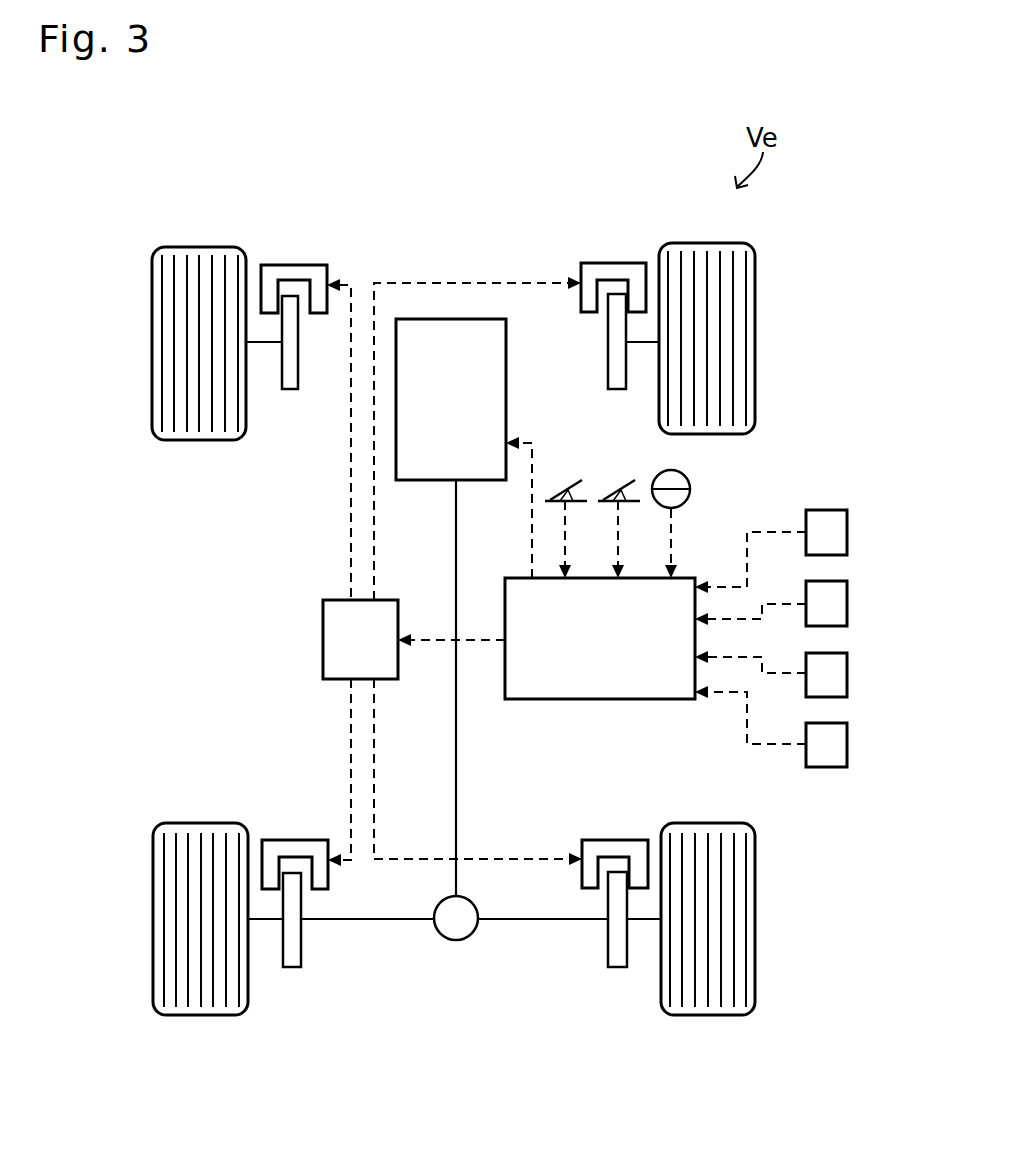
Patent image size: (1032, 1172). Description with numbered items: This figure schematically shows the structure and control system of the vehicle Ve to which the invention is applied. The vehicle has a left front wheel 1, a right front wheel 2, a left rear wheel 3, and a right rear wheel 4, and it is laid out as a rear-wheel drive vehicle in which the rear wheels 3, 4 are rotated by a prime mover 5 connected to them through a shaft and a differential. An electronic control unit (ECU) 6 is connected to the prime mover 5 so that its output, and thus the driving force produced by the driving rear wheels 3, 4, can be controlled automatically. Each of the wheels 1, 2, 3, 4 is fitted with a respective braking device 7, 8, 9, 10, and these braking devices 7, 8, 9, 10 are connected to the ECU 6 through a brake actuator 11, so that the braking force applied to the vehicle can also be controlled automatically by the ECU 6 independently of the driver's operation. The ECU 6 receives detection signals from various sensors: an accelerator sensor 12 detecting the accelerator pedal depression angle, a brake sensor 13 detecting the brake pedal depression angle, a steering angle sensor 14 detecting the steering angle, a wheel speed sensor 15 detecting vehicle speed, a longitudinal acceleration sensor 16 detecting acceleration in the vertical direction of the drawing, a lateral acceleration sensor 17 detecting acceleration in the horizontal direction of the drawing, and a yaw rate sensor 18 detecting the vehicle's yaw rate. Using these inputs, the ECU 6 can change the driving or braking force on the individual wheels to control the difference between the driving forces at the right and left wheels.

The left front wheel 1 is at (152, 358).
The right front wheel 2 is at (755, 372).
The left rear wheel 3 is at (153, 937).
The right rear wheel 4 is at (755, 941).
The prime mover 5 is at (506, 352).
The electronic control unit (ECU) 6 is at (585, 699).
The braking device 7 is at (309, 338).
The braking device 8 is at (600, 344).
The braking device 9 is at (285, 836).
The braking device 10 is at (633, 830).
The brake actuator 11 is at (323, 640).
The accelerator sensor 12 is at (620, 479).
The brake sensor 13 is at (568, 479).
The steering angle sensor 14 is at (690, 477).
The wheel speed sensor 15 is at (847, 532).
The longitudinal acceleration sensor 16 is at (847, 604).
The lateral acceleration sensor 17 is at (847, 673).
The yaw rate sensor 18 is at (847, 744).